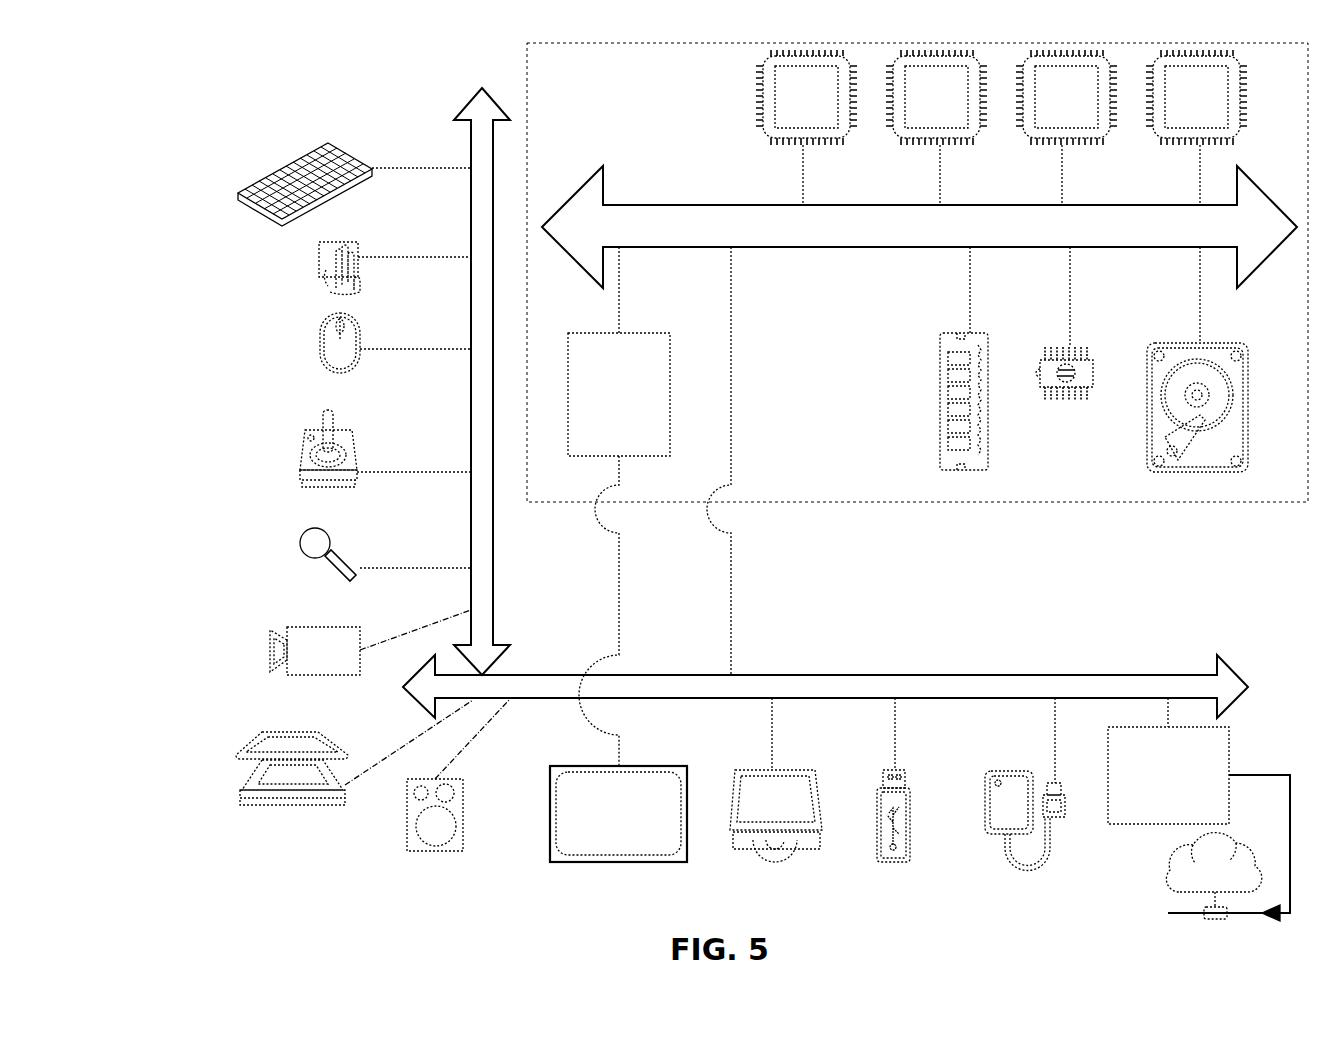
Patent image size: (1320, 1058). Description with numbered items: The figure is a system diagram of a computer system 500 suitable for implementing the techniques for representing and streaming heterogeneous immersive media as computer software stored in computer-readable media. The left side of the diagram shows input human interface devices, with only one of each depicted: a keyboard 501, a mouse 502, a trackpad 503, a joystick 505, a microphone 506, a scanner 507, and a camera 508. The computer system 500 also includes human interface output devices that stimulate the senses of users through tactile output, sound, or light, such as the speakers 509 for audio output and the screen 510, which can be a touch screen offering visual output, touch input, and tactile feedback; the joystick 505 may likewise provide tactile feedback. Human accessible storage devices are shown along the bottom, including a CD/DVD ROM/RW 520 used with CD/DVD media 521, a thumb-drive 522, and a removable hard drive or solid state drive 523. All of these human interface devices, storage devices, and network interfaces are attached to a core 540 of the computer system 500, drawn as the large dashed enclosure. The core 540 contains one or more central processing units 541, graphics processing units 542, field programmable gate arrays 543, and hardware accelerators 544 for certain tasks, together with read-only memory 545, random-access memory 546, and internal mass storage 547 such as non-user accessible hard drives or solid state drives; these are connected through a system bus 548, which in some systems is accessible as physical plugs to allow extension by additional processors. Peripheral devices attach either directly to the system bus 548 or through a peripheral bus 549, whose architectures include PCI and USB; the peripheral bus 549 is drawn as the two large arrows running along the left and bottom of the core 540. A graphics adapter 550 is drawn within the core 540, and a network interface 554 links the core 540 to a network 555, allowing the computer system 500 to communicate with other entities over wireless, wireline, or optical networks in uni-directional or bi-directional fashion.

The computer system 500 is at (176, 94).
The keyboard 501 is at (236, 192).
The mouse 502 is at (310, 343).
The trackpad 503 is at (315, 268).
The joystick 505 is at (298, 468).
The microphone 506 is at (300, 540).
The scanner 507 is at (240, 786).
The camera 508 is at (273, 652).
The speakers 509 is at (437, 851).
The touch screen 510 is at (617, 862).
The CD/DVD ROM/RW 520 is at (818, 850).
The CD/DVD media 521 is at (796, 807).
The thumb-drive 522 is at (890, 862).
The removable hard drive or solid state drive 523 is at (985, 840).
The core 540 is at (908, 502).
The Central Processing Unit (CPU) 541 is at (806, 127).
The Graphics Processing Unit (GPU) 542 is at (936, 127).
The Field Programmable Gate Array (FPGA) 543 is at (1066, 127).
The hardware accelerator 544 is at (1196, 127).
The Read-only memory (ROM) 545 is at (1057, 400).
The Random-access memory 546 is at (940, 395).
The internal mass storage 547 is at (1155, 343).
The system bus 548 is at (919, 227).
The peripheral bus 549 is at (470, 118).
The graphics adapter 550 is at (619, 506).
The network interface 554 is at (1199, 809).
The network / cloud 555 is at (1170, 880).